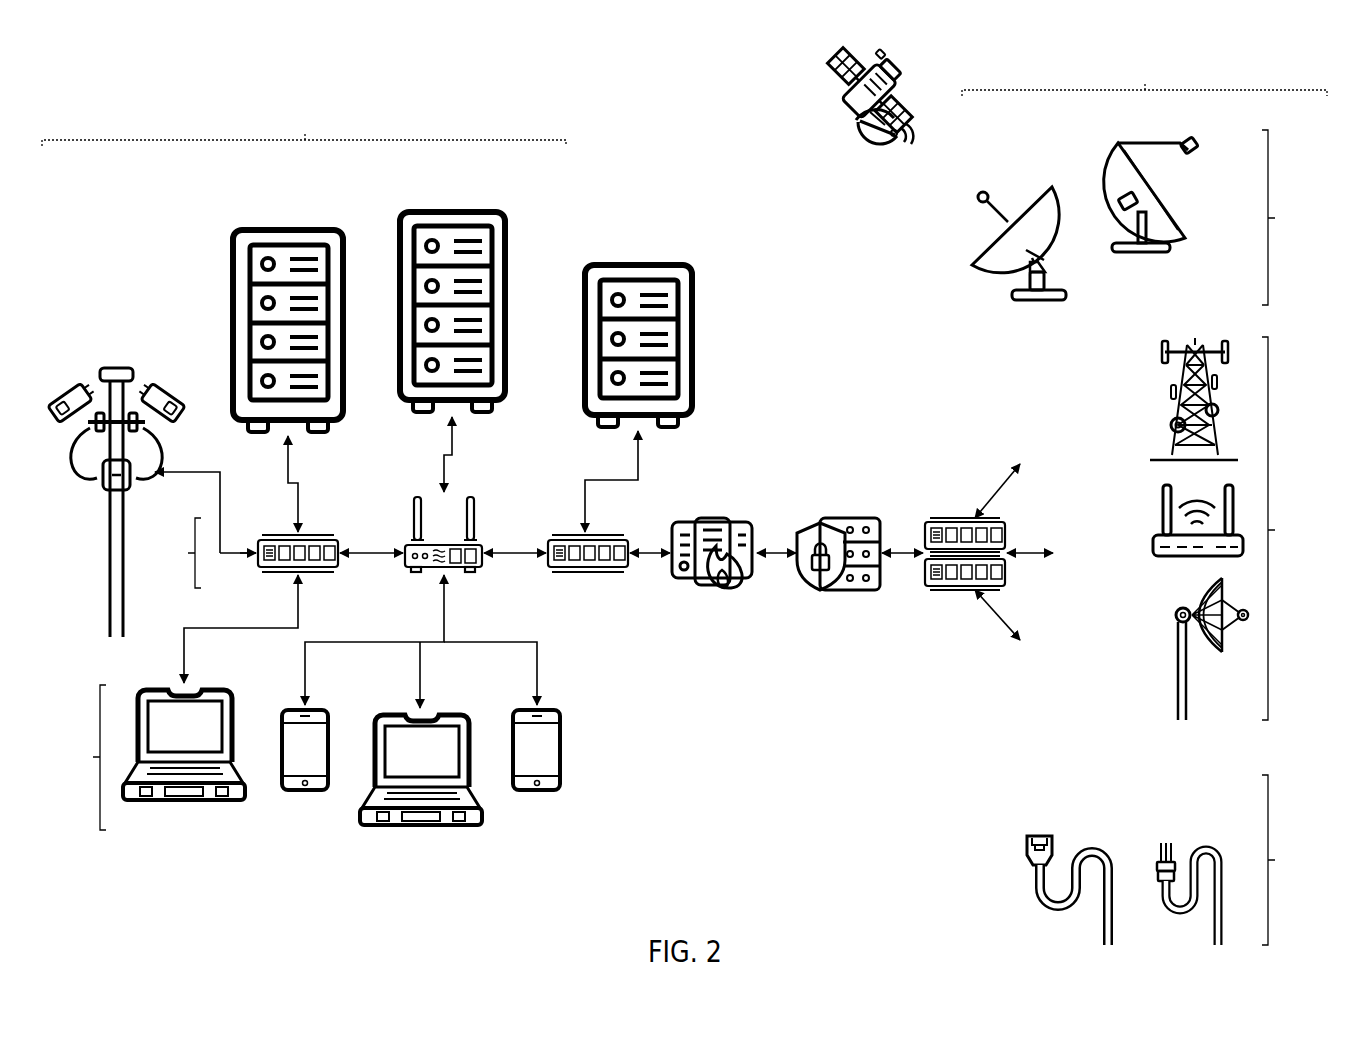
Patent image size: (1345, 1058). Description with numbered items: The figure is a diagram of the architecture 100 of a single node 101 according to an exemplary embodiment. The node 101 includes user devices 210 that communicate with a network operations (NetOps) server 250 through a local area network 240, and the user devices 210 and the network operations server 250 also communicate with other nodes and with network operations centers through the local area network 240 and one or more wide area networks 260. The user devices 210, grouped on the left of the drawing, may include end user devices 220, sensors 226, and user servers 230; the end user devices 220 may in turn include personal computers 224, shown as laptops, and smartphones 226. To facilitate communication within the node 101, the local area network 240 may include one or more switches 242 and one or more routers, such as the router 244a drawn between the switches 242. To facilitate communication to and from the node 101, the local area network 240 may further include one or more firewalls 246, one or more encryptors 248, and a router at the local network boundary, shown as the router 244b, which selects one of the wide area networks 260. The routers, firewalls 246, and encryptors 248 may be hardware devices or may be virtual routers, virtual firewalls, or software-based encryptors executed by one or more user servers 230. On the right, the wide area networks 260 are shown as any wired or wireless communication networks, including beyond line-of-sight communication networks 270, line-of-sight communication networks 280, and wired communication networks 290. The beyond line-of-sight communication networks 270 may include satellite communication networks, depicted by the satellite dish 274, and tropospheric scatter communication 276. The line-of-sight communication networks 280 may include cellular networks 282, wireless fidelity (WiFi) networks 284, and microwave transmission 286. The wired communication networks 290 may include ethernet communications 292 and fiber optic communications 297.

The architecture 100 is at (99, 78).
The node 101 is at (840, 760).
The user devices 210 is at (304, 123).
The end user devices 220 is at (79, 757).
The personal computers 224 is at (180, 805).
The sensors / smartphones 226 is at (135, 377).
The user servers 230 is at (370, 295).
The local area network 240 is at (175, 553).
The switches 242 is at (326, 578).
The router 244a is at (472, 578).
The router 244b is at (937, 592).
The firewalls 246 is at (708, 590).
The encryptors 248 is at (848, 595).
The network operations (NetOps) server 250 is at (638, 320).
The wide area networks 260 is at (1144, 74).
The beyond line-of-sight communication networks 270 is at (1292, 217).
The satellite dish 274 is at (1050, 250).
The tropospheric scatter communication 276 is at (1168, 185).
The line-of-sight communication networks 280 is at (1293, 528).
The cellular networks 282 is at (1152, 371).
The wireless fidelity (WiFi) networks 284 is at (1156, 536).
The microwave transmission 286 is at (1166, 649).
The wired communication networks 290 is at (1292, 860).
The ethernet communications 292 is at (1098, 934).
The fiber optic communications 297 is at (1202, 938).